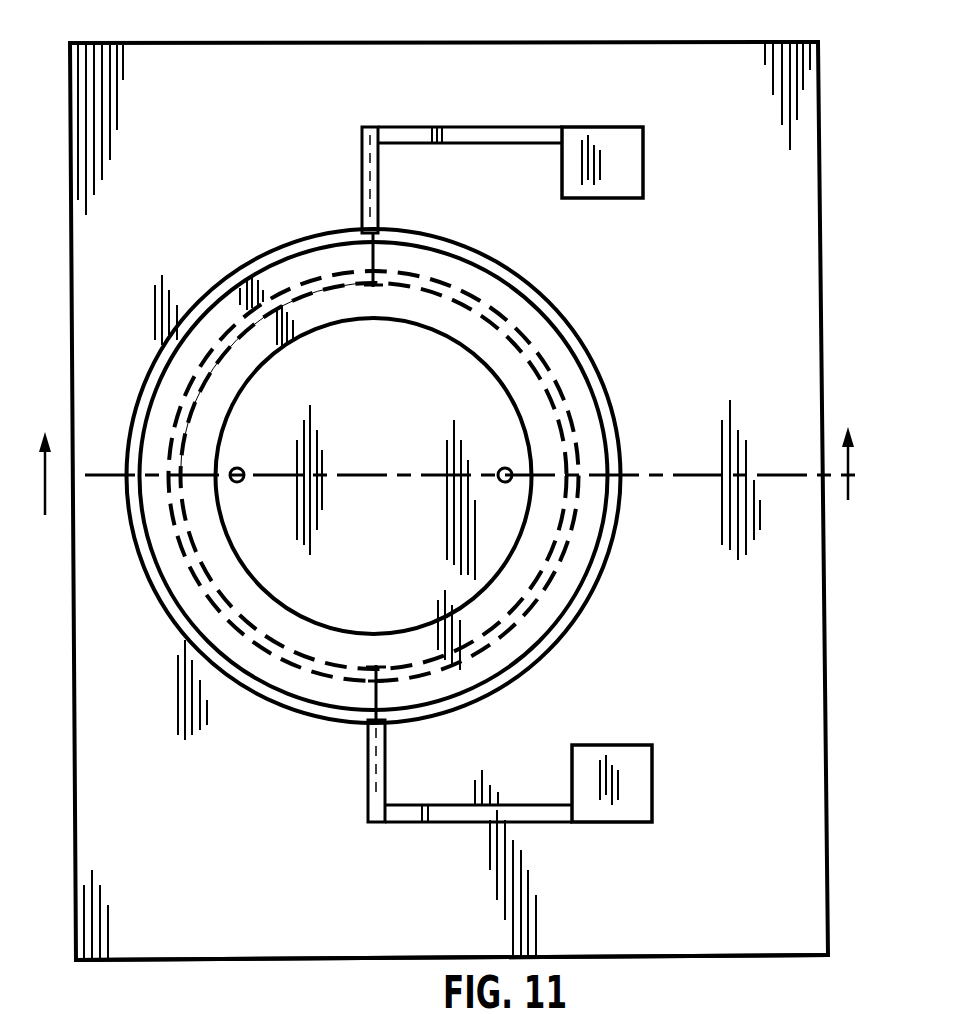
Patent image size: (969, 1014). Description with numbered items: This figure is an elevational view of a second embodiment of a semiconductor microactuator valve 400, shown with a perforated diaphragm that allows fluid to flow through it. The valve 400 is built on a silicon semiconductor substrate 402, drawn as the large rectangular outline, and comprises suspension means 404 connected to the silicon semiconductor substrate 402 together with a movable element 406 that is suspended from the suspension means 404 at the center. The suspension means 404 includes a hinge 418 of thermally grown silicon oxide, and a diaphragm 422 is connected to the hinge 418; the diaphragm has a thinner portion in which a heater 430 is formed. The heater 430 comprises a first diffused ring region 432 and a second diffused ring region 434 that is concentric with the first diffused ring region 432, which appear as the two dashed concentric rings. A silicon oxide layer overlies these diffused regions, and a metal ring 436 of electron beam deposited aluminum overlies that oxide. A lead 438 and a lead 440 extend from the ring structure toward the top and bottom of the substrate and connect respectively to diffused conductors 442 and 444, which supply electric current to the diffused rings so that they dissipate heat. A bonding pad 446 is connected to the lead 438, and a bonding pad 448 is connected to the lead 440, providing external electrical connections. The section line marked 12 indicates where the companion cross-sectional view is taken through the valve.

The semiconductor microactuator valve 400 is at (602, 38).
The silicon semiconductor substrate 402 is at (318, 943).
The suspension means 404 is at (600, 390).
The movable element 406 is at (406, 442).
The section line 12- 12 is at (451, 449).
The hinge 418 is at (572, 342).
The diaphragm 422 is at (488, 293).
The heater 430 is at (280, 297).
The first diffused ring region 432 is at (223, 337).
The second diffused ring region 434 is at (260, 322).
The metal ring 436 is at (505, 365).
The lead 438 is at (385, 766).
The lead 440 is at (362, 152).
The diffused conductor 442 is at (368, 708).
The diffused conductor 444 is at (375, 247).
The bonding pad 446 is at (652, 765).
The bonding pad 448 is at (643, 178).